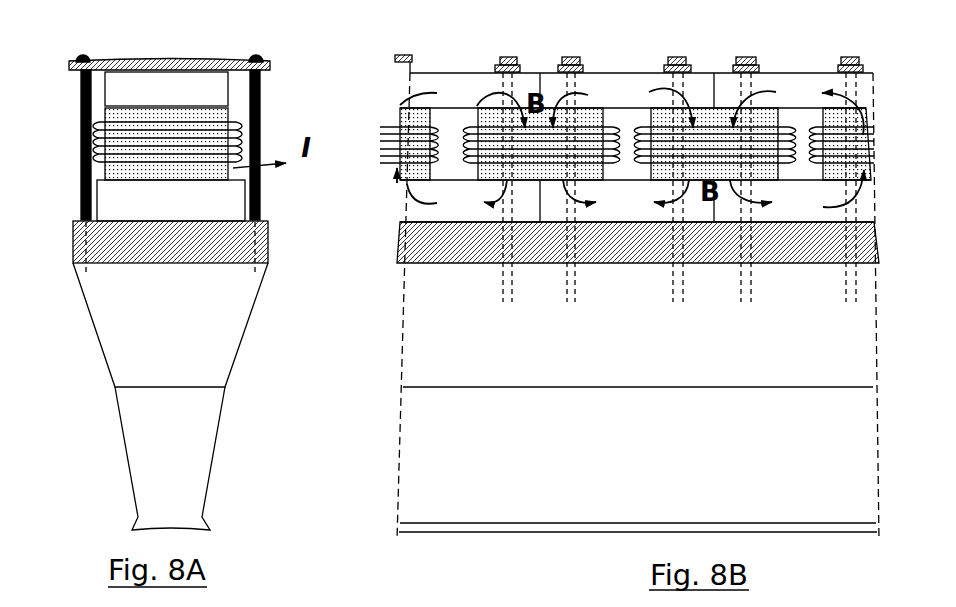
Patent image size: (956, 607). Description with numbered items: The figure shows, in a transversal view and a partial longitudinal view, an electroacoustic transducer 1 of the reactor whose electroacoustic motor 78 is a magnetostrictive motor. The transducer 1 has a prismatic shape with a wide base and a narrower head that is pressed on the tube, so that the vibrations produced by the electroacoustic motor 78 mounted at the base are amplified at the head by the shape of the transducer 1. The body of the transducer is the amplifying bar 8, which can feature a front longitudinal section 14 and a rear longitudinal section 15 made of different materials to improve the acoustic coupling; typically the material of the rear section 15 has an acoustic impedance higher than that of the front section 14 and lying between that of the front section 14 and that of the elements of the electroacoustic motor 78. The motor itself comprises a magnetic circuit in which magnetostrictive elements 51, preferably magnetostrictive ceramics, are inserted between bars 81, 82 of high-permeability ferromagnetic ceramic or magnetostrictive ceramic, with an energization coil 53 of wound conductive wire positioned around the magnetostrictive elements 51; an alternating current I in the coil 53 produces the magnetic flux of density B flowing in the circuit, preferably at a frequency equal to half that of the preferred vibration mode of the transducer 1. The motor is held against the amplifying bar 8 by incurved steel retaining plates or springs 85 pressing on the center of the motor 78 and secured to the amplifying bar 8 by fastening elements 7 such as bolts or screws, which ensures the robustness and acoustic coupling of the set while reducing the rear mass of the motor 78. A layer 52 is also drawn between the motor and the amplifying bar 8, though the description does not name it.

In FIG. 8A, the electroacoustic transducer 1 is at (279, 82).
In FIG. 8B, the electroacoustic transducer 1 is at (392, 97).
In FIG. 8A, the fastening element 7 is at (248, 53).
In FIG. 8B, the fastening element 7 is at (577, 58).
In FIG. 8A, the amplifying bar 8 is at (181, 396).
In FIG. 8B, the amplifying bar 8 is at (600, 306).
In FIG. 8A, the front longitudinal section 14 is at (157, 460).
In FIG. 8B, the front longitudinal section 14 is at (558, 473).
In FIG. 8A, the rear longitudinal section 15 is at (155, 332).
In FIG. 8B, the rear longitudinal section 15 is at (558, 357).
In FIG. 8A, the magnetostrictive element 51 is at (122, 122).
In FIG. 8B, the magnetostrictive element 51 is at (487, 117).
In FIG. 8A, the base layer 52 is at (148, 260).
In FIG. 8B, the base layer 52 is at (640, 260).
In FIG. 8A, the energization coil 53 is at (100, 143).
In FIG. 8B, the energization coil 53 is at (382, 147).
In FIG. 8A, the electroacoustic motor 78 is at (72, 184).
In FIG. 8B, the electroacoustic motor 78 is at (375, 250).
In FIG. 8A, the bar 81 is at (105, 88).
In FIG. 8B, the bar 81 is at (641, 72).
In FIG. 8A, the bar 82 is at (245, 202).
In FIG. 8B, the bar 82 is at (420, 208).
In FIG. 8A, the retaining plate or spring 85 is at (157, 63).
In FIG. 8B, the retaining plate or spring 85 is at (520, 68).